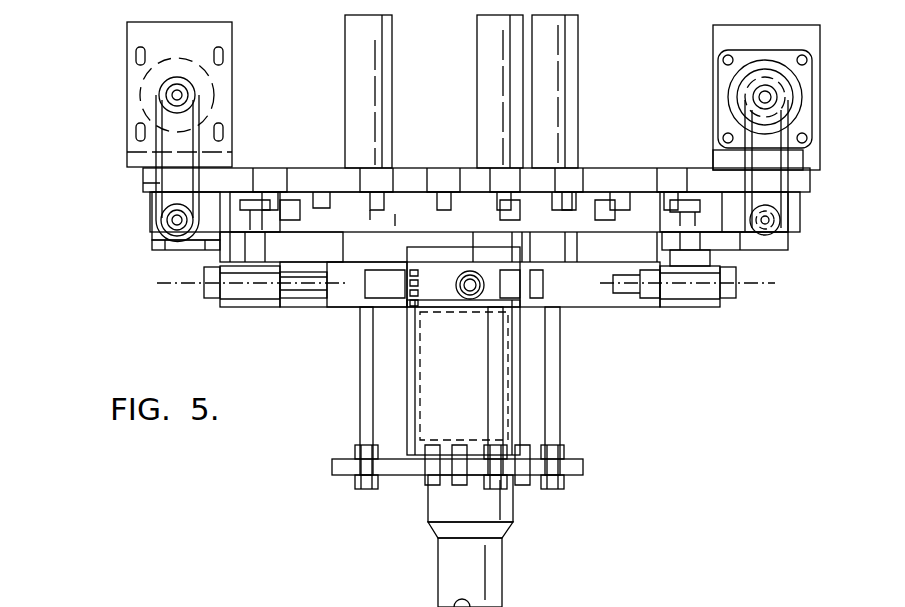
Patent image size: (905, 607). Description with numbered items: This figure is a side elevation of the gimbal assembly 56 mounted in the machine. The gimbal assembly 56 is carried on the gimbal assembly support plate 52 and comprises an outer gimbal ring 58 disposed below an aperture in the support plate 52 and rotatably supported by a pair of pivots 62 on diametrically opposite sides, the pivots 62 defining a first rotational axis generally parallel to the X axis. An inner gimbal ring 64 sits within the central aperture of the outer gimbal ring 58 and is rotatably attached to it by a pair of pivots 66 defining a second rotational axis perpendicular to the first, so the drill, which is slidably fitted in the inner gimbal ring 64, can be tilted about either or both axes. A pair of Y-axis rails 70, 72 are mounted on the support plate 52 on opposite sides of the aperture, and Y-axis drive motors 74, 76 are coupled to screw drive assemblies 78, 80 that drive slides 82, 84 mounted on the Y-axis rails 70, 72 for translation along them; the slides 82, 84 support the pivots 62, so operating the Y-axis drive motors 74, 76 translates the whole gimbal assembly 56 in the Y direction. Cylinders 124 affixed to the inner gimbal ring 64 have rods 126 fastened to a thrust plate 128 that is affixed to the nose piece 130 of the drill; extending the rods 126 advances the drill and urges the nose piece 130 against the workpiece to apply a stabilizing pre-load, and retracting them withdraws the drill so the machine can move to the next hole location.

The gimbal assembly support plate 52 is at (417, 171).
The gimbal assembly 56 is at (592, 320).
The outer gimbal ring 58 is at (296, 309).
The pivots 62 is at (210, 300).
The inner gimbal ring 64 is at (337, 306).
The pivots 66 is at (480, 307).
The Y-axis rail 70 is at (232, 259).
The Y-axis rail 72 is at (703, 300).
The Y-axis drive motor 74 is at (140, 108).
The Y-axis drive motor 76 is at (722, 92).
The screw drive assembly 78 is at (150, 204).
The screw drive assembly 80 is at (745, 209).
The slide 82 is at (152, 245).
The slide 84 is at (784, 253).
The cylinders 124 is at (350, 66).
The rods 126 is at (359, 412).
The thrust plate 128 is at (400, 474).
The nose piece 130 is at (502, 562).